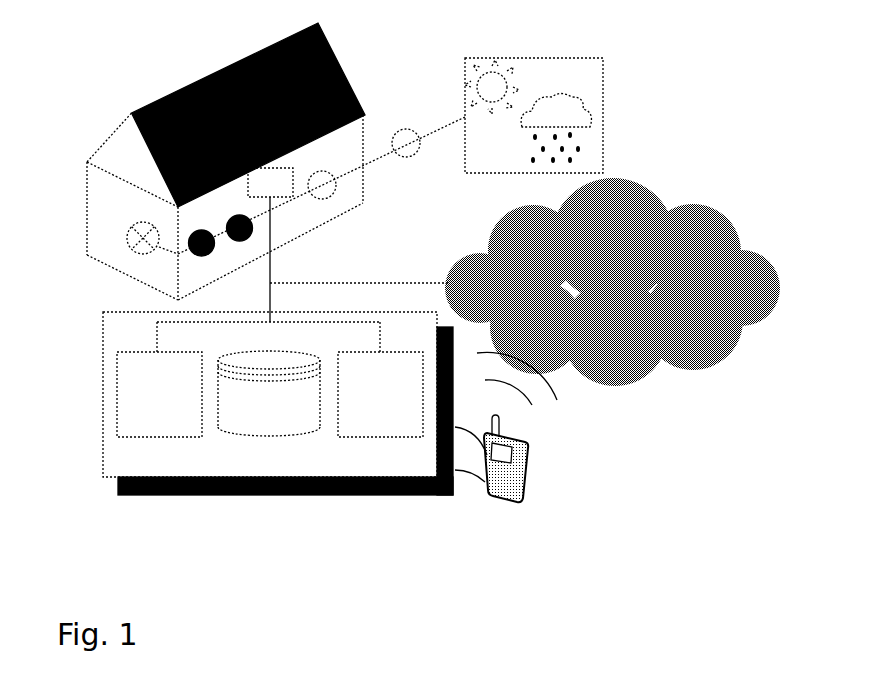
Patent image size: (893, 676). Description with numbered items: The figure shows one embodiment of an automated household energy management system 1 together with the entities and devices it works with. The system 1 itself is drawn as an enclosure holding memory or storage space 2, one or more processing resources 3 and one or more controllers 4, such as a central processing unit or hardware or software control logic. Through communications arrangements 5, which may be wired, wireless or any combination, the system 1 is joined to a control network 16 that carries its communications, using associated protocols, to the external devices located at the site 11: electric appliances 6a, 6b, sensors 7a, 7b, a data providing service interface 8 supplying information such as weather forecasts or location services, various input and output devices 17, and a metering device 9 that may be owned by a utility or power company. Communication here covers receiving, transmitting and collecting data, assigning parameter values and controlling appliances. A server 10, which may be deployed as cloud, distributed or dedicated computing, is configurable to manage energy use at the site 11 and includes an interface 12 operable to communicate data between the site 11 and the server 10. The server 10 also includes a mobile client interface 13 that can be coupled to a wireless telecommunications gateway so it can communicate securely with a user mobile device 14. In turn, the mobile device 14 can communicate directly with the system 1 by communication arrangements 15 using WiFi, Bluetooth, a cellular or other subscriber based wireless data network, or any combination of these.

The automated household energy management system 1 is at (103, 333).
The memory or storage space 2 is at (285, 436).
The processing resources 3 is at (165, 438).
The controllers 4 is at (395, 438).
The communications arrangements 5 is at (270, 298).
The electric appliance 6a is at (214, 246).
The electric appliance 6b is at (228, 218).
The sensor 7a is at (336, 190).
The sensor 7b is at (420, 147).
The data providing service interface 8 is at (603, 83).
The metering device 9 is at (127, 233).
The server 10 is at (611, 282).
The site 11 is at (337, 55).
The interface 12 is at (444, 283).
The mobile client interface 13 is at (527, 360).
The mobile device 14 is at (518, 502).
The communication arrangements 15 is at (457, 471).
The control network 16 is at (347, 172).
The input and output devices 17 is at (295, 198).